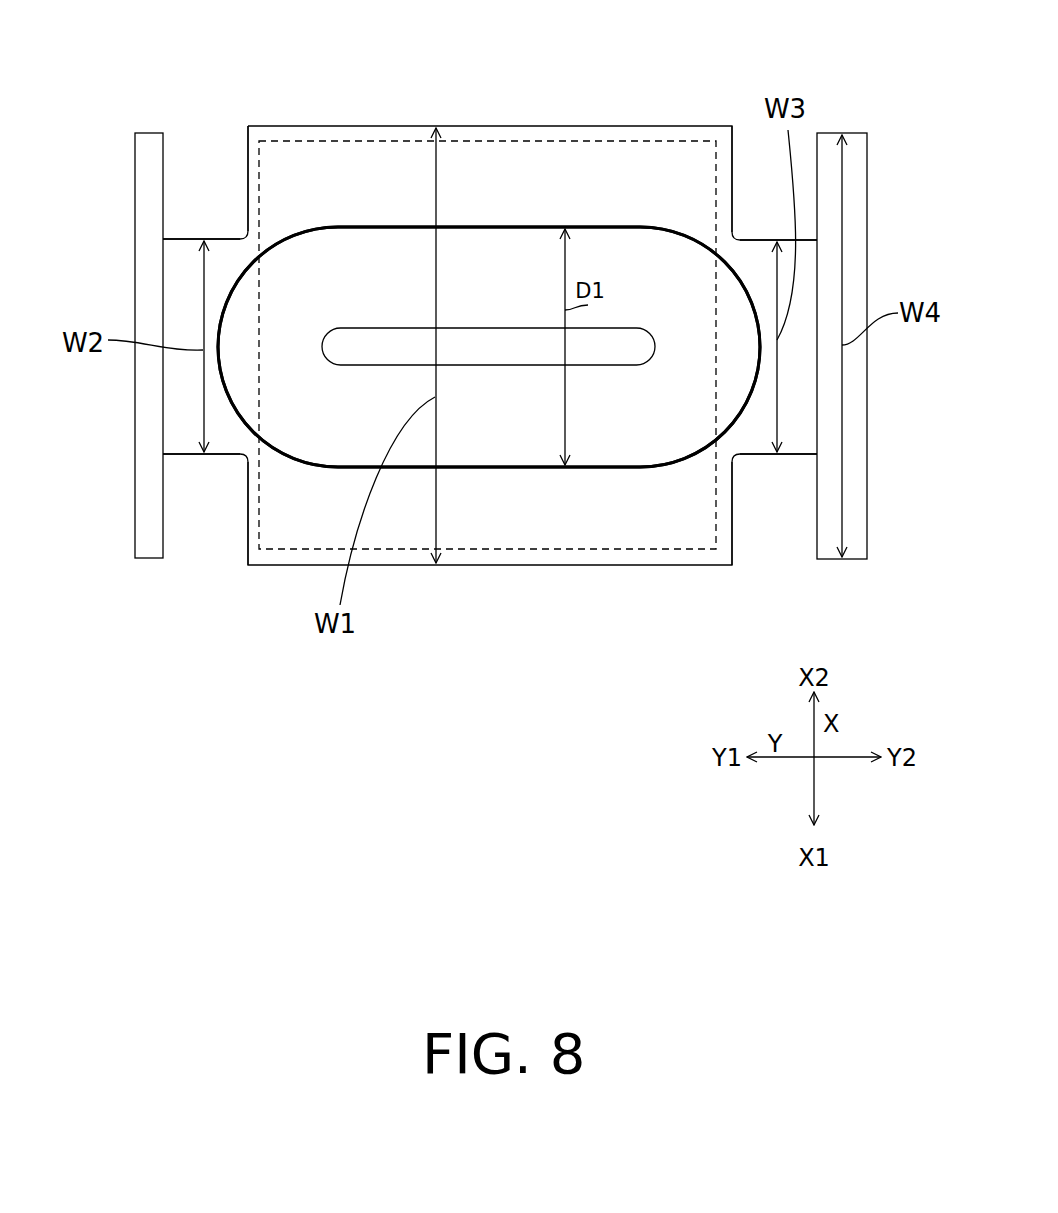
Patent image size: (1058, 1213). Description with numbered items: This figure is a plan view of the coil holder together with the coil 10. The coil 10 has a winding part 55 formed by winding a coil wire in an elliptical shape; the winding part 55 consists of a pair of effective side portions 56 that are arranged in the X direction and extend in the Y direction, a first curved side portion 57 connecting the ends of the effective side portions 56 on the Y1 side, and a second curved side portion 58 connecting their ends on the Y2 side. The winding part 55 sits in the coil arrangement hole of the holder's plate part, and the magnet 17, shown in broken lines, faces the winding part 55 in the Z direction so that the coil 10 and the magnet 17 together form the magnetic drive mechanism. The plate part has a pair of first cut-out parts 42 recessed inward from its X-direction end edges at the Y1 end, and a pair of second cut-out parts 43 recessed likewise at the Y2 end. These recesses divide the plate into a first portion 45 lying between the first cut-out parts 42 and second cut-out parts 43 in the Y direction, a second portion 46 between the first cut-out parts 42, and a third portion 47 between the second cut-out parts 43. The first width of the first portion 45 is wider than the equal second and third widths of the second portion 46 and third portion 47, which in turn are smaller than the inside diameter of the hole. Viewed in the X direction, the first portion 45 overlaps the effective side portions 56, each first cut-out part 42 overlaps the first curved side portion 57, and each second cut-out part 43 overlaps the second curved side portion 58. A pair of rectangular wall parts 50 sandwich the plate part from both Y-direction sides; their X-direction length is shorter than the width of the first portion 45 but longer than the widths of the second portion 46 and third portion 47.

The coil 10 is at (297, 225).
The magnet 17 is at (643, 147).
The first cut-out parts 42 is at (192, 219).
The second cut-out parts 43 is at (752, 219).
The first portion 45 is at (470, 568).
The second portion 46 is at (190, 410).
The third portion 47 is at (790, 385).
The wall parts 50 is at (135, 180).
The winding part 55 is at (369, 293).
The effective side portions 56 is at (479, 402).
The first curved side portion 57 is at (268, 353).
The second curved side portion 58 is at (710, 353).